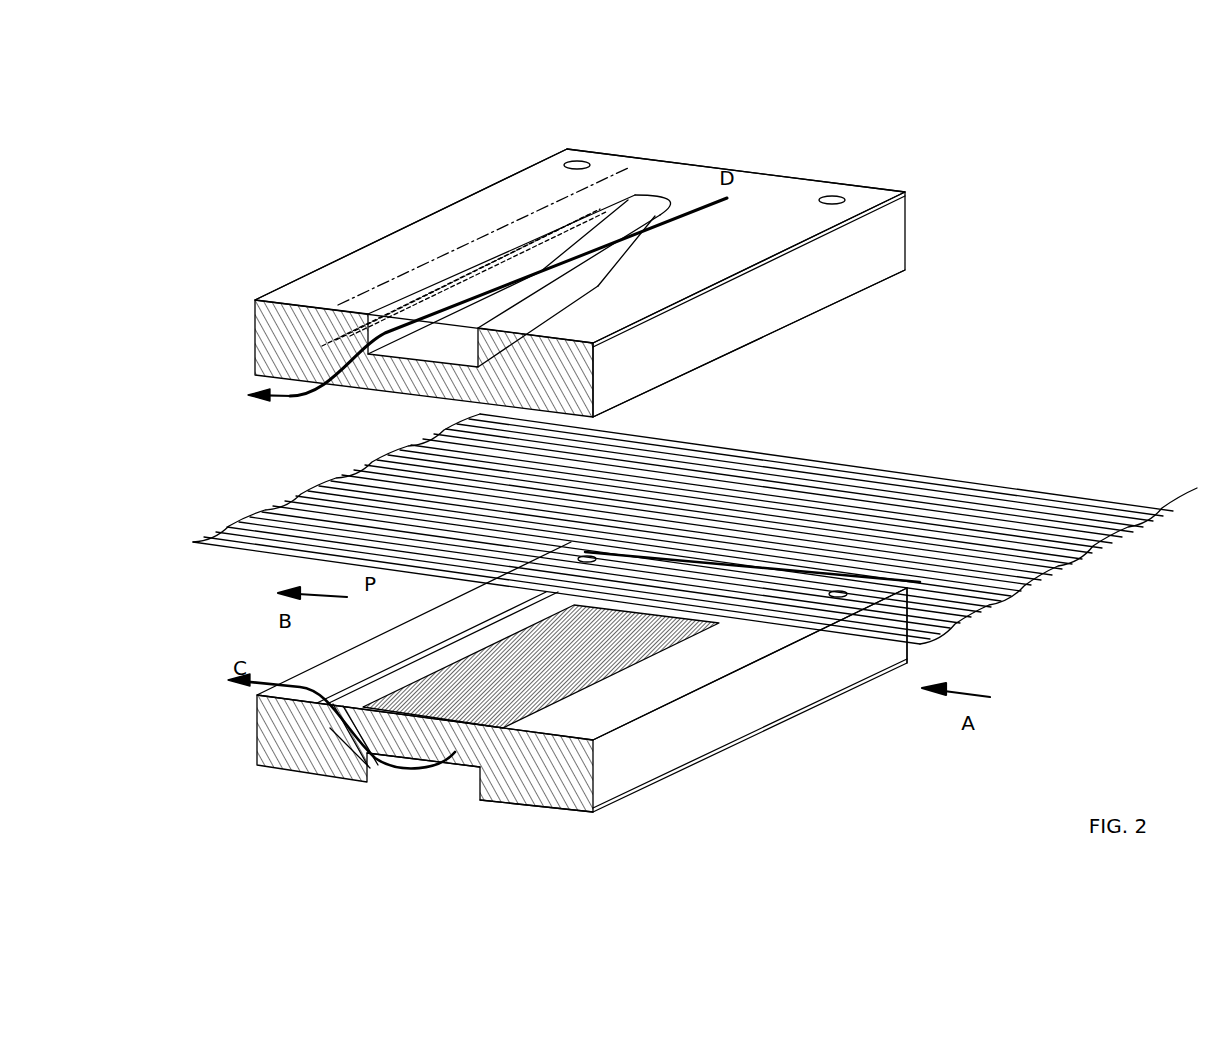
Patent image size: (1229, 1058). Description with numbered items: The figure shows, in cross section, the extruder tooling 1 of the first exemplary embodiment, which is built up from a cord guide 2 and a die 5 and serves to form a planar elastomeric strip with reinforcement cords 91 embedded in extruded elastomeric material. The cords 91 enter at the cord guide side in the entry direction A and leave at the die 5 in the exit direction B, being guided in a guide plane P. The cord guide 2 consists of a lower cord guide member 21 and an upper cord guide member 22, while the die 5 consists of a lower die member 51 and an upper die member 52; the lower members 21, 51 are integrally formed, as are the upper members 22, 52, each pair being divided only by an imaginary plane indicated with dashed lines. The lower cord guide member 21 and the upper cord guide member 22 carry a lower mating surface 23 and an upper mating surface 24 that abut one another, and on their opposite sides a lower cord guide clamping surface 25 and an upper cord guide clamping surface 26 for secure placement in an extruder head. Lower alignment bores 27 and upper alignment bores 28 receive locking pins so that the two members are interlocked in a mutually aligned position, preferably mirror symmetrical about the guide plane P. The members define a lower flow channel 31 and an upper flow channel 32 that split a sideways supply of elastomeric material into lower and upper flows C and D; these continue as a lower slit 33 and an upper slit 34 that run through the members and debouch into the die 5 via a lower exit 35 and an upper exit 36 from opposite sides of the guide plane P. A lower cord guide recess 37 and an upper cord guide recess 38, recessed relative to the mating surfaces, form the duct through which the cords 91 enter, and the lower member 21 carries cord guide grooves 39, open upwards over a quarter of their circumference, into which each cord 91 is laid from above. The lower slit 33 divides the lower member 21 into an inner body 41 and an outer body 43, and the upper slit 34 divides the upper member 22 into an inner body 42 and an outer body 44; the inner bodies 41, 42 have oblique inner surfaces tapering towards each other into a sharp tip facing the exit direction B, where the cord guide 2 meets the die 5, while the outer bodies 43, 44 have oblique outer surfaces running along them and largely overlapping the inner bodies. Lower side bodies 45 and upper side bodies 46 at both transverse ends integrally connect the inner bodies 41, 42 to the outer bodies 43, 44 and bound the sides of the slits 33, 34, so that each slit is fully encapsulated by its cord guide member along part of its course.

The extruder tooling 1 is at (294, 207).
The cord guide 2 is at (890, 247).
The die 5 is at (265, 331).
The lower cord guide member 21 is at (593, 790).
The upper cord guide member 22 is at (795, 208).
The lower mating surface 23 is at (787, 625).
The upper mating surface 24 is at (873, 285).
The lower cord guide clamping surface 25 is at (513, 803).
The upper cord guide clamping surface 26 is at (420, 268).
The lower alignment bores 27 is at (592, 557).
The upper alignment bores 28 is at (563, 163).
The lower flow channel 31 is at (405, 763).
The upper flow channel 32 is at (542, 269).
The lower slit 33 is at (320, 737).
The upper slit 34 is at (322, 320).
The lower exit 35 is at (333, 703).
The upper exit 36 is at (325, 384).
The lower cord guide recess 37 is at (633, 707).
The upper cord guide recess 38 is at (777, 333).
The cord guide grooves 39 is at (640, 650).
The inner body 41 is at (370, 688).
The inner body 42 is at (345, 383).
The outer body 43 is at (353, 773).
The outer body 44 is at (357, 320).
The lower side bodies 45 is at (505, 607).
The upper side bodies 46 is at (640, 220).
The lower die member 51 is at (257, 738).
The upper die member 52 is at (467, 206).
The reinforcement cords 91 is at (935, 500).